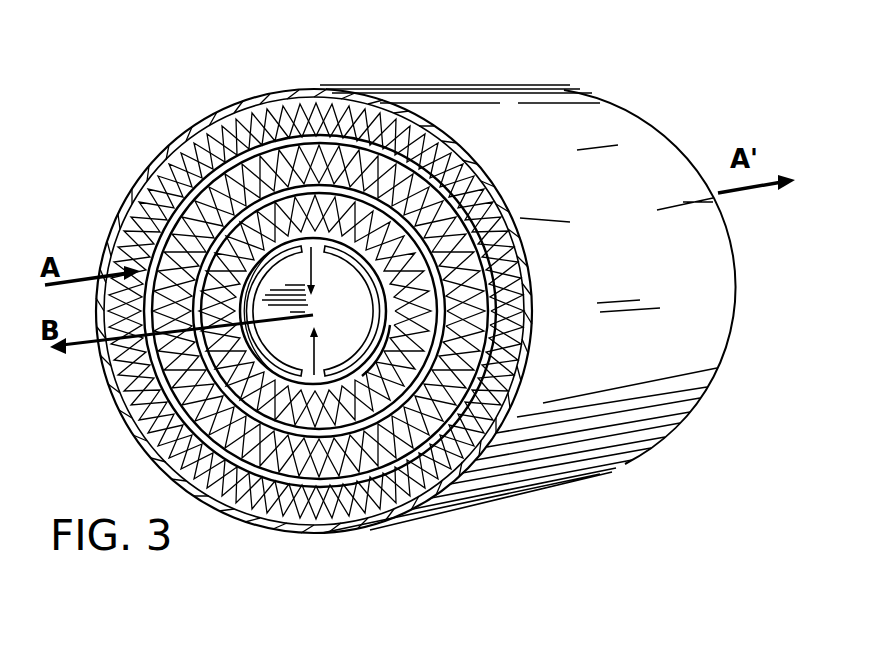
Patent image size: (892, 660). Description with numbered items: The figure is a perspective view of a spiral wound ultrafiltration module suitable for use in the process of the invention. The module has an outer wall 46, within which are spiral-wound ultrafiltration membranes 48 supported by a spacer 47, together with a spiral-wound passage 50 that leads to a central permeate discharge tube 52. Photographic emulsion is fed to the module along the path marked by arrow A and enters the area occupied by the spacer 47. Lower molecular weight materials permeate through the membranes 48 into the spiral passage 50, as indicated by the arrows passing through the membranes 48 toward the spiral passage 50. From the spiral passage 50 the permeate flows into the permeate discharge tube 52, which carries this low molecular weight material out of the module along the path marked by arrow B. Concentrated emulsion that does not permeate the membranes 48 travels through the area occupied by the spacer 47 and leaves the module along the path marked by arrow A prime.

The outer wall 46 is at (257, 100).
The spacer 47 is at (209, 122).
The ultrafiltration membranes 48 is at (300, 96).
The spiral-wound passage 50 is at (378, 96).
The central permeate discharge tube 52 is at (110, 387).